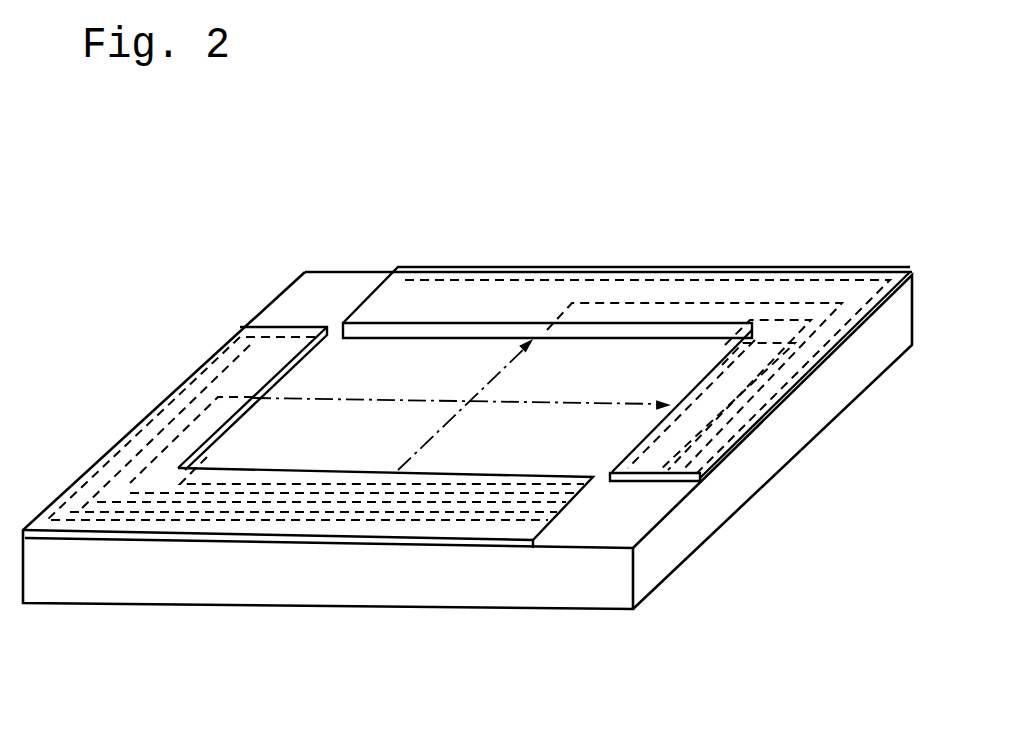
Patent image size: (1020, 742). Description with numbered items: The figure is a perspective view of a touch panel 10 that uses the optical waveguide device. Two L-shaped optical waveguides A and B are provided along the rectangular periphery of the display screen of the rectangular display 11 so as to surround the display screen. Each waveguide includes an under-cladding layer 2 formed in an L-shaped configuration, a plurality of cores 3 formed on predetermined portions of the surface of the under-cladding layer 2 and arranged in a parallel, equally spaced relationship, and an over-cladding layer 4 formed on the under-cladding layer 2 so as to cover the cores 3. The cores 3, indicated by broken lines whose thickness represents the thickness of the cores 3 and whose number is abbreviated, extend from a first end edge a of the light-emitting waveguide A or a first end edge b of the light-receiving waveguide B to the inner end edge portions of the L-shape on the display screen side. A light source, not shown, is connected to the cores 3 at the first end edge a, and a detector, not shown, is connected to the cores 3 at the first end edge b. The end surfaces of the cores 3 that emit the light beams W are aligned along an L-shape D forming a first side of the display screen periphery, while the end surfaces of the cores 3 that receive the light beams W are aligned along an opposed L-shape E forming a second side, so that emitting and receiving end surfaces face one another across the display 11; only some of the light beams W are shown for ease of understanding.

The touch panel 10 is at (320, 237).
The under-cladding layer 2 is at (320, 543).
The cores 3 is at (290, 522).
The over-cladding layer 4 is at (706, 288).
The display 11 is at (603, 360).
The light beams W is at (422, 400).
The light-emitting L-shaped optical waveguide A is at (277, 327).
The light-receiving L-shaped optical waveguide B is at (372, 290).
The L-shape (first side) D is at (290, 383).
The L-shape (second side) E is at (710, 373).
The first end edge a is at (566, 520).
The first end edge b is at (672, 483).